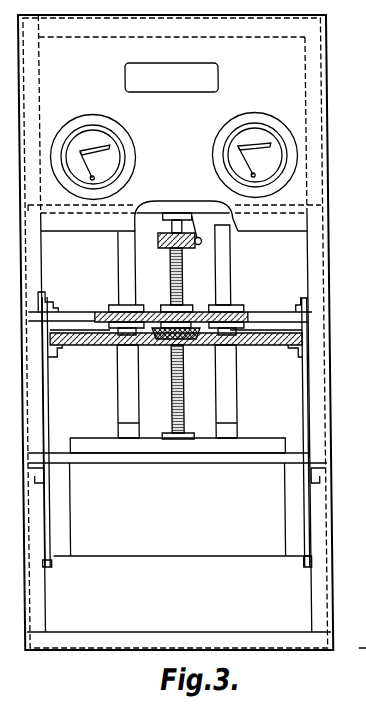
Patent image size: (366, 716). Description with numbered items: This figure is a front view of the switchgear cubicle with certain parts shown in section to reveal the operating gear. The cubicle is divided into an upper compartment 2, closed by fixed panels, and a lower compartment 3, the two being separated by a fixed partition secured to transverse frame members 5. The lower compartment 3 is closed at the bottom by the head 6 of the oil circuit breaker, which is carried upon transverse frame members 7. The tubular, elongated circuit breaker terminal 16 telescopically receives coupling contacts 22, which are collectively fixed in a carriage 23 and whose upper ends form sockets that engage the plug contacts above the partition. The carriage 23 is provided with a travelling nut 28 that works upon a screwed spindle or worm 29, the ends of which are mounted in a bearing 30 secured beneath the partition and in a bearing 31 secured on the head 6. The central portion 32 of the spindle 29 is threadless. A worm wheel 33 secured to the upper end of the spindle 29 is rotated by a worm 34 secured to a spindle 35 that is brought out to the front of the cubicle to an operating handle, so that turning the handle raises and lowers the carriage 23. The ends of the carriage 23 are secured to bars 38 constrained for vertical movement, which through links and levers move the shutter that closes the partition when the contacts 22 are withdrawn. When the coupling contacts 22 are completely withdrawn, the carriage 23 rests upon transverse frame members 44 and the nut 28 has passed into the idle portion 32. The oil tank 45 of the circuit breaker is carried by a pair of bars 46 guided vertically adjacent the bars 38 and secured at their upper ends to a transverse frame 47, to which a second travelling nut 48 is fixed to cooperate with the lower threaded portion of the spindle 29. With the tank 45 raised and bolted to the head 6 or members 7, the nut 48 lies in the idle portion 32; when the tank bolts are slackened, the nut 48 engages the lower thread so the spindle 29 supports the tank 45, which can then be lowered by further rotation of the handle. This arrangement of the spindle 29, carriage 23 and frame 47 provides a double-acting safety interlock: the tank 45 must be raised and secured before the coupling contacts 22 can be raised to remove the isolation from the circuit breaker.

The upper compartment 2 is at (219, 16).
The lower compartment 3 is at (251, 311).
The transverse frame members 5 is at (184, 201).
The head of the oil circuit breaker 6 is at (262, 447).
The transverse frame members 7 is at (259, 464).
The circuit breaker terminal 16 is at (237, 362).
The coupling contacts 22 is at (125, 249).
The carriage 23 is at (250, 308).
The travelling nut 28 is at (192, 306).
The screwed spindle or worm 29 is at (171, 265).
The bearing 30 is at (167, 213).
The bearing 31 is at (187, 434).
The central threadless portion 32 is at (194, 342).
The worm wheel 33 is at (163, 241).
The worm 34 is at (201, 237).
The spindle 35 is at (203, 242).
The bars 38 is at (306, 298).
The transverse frame members 44 is at (46, 292).
The oil tank 45 is at (160, 509).
The bars 46 is at (49, 391).
The transverse frame 47 is at (66, 352).
The travelling nut 48 is at (148, 346).